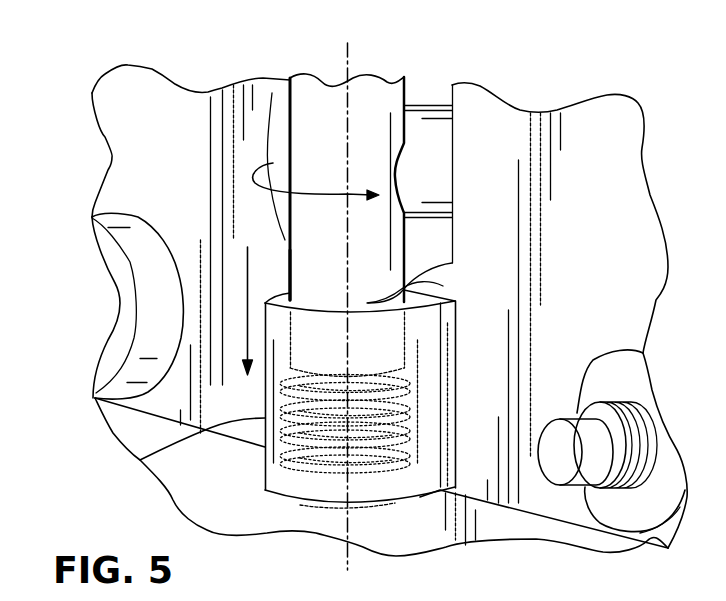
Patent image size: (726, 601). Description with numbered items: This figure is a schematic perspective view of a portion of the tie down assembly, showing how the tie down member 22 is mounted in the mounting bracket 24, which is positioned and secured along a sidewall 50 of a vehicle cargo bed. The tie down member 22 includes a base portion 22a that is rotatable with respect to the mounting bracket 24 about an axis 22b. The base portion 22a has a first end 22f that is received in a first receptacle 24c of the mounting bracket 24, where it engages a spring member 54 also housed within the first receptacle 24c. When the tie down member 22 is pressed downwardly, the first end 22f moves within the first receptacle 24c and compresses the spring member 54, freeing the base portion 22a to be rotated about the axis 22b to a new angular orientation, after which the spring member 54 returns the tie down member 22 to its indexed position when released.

The tie down member 22 is at (370, 97).
The mounting bracket 24 is at (168, 143).
The base portion 22a is at (297, 267).
The first end 22f is at (452, 263).
The first receptacle 24c is at (143, 460).
The sidewall 50 is at (193, 492).
The axis 22b is at (343, 527).
The spring member 54 is at (387, 472).